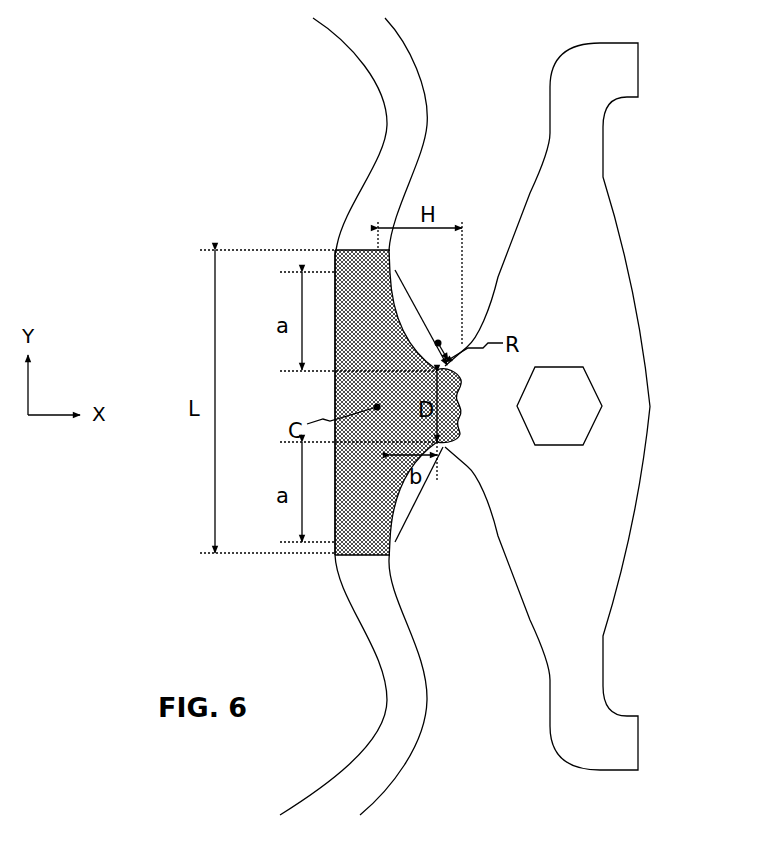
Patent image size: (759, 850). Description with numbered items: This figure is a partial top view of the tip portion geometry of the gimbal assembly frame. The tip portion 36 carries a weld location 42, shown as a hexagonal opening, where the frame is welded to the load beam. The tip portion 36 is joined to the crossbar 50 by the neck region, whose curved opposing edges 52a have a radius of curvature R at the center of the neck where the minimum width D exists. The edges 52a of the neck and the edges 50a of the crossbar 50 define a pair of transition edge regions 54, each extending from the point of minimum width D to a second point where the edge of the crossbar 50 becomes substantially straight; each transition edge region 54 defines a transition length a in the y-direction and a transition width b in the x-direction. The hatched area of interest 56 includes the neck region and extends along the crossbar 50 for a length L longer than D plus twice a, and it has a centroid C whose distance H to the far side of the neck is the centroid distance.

The tip portion 36 is at (654, 404).
The weld location 42 is at (593, 388).
The crossbar 50 is at (335, 378).
The edges of the crossbar 50a is at (400, 318).
The curved opposing edges of the neck region 52a is at (460, 400).
The transition edge regions 54 is at (426, 406).
The area of interest 56 is at (334, 397).